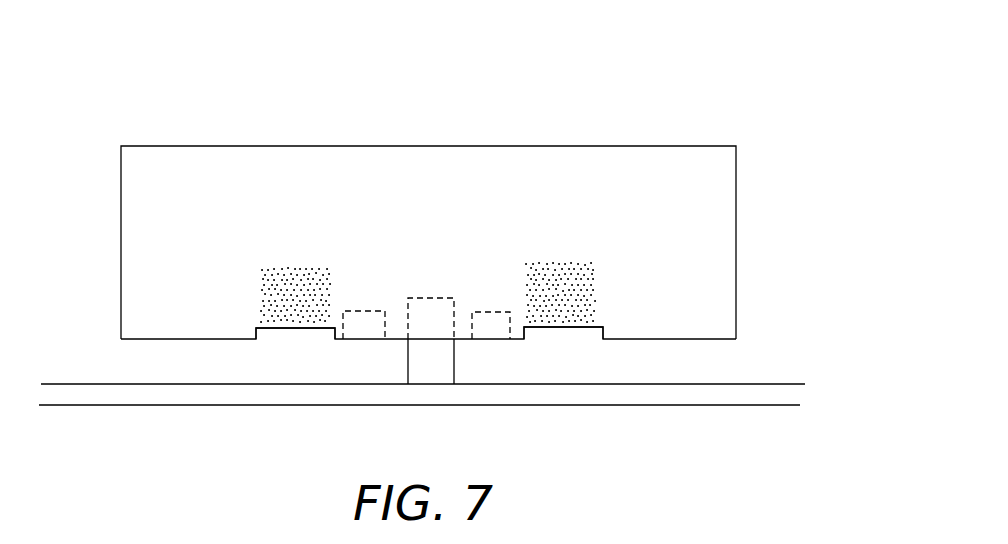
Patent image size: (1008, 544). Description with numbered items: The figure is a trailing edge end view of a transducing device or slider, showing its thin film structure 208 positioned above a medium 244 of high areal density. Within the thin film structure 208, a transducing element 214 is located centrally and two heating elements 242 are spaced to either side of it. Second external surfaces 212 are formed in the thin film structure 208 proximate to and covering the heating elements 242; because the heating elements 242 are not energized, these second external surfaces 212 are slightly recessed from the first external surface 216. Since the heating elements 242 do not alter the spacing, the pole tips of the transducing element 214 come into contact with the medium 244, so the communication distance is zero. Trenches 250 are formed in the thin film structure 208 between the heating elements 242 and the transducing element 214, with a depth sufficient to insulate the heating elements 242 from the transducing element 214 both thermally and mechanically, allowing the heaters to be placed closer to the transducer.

The thin film structure 208 is at (784, 146).
The second external surfaces 212 is at (289, 329).
The transducing element 214 is at (416, 388).
The first external surface 216 is at (203, 339).
The heating elements 242 is at (262, 273).
The medium 244 is at (722, 395).
The trenches 250 is at (368, 329).